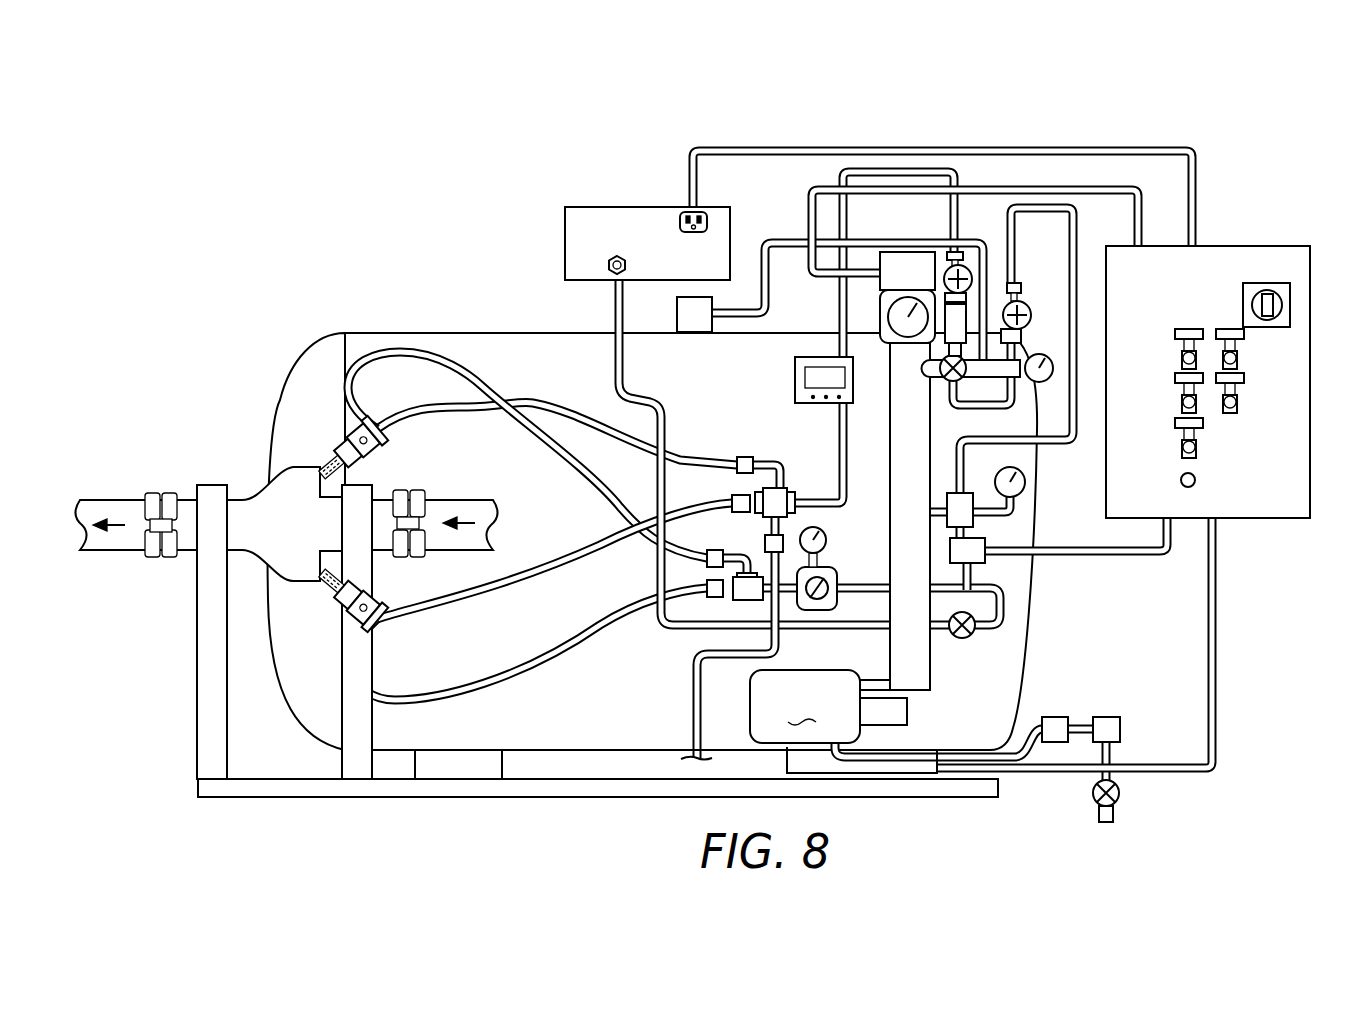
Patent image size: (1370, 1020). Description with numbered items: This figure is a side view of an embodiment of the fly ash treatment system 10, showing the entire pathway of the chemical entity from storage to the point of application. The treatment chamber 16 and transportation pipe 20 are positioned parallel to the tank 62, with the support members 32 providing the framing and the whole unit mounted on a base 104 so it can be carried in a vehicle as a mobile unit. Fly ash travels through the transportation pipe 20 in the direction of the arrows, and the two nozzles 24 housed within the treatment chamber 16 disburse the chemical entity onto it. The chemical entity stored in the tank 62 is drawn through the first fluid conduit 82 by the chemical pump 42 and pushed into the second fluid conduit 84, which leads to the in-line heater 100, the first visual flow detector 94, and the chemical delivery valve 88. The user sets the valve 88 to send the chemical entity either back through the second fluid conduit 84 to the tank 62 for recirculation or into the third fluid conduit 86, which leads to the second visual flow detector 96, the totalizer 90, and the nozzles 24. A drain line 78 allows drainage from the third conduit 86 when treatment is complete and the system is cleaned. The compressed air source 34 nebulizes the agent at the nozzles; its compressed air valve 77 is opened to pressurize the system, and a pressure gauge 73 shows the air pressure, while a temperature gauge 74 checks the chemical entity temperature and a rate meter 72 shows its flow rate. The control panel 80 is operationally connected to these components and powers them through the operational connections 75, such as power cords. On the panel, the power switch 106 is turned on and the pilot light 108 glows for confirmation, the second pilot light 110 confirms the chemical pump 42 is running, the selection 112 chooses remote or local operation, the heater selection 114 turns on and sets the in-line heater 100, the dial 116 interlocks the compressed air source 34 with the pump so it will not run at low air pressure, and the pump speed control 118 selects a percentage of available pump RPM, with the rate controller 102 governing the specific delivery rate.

The fly ash treatment system 10 is at (293, 250).
The treatment chamber 16 is at (290, 493).
The transportation pipe 20 is at (115, 499).
The nozzle 24 is at (327, 457).
The support member 32 is at (210, 612).
The compressed air source 34 is at (585, 207).
The chemical pump 42 is at (805, 706).
The tank 62 is at (470, 332).
The rate meter 72 is at (905, 298).
The pressure gauge 73 is at (825, 540).
The temperature gauge 74 is at (1037, 381).
The operational connections 75 is at (1142, 207).
The compressed air valve 77 is at (967, 642).
The drain line 78 is at (688, 717).
The control panel 80 is at (1235, 262).
The first fluid conduit 82 is at (1050, 746).
The second fluid conduit 84 is at (988, 243).
The third fluid conduit 86 is at (555, 400).
The chemical delivery valve 88 is at (947, 385).
The totalizer 90 is at (795, 380).
The first visual flow detector 94 is at (1025, 302).
The second visual flow detector 96 is at (975, 280).
The in-line heater 100 is at (903, 488).
The rate controller 102 is at (895, 708).
The base 104 is at (198, 790).
The power switch 106 is at (1283, 303).
The pilot light 108 is at (1233, 360).
The second pilot light 110 is at (1185, 356).
The selection 112 is at (1185, 402).
The heater selection 114 is at (1233, 403).
The dial 116 is at (1185, 443).
The pump speed control 118 is at (1195, 480).